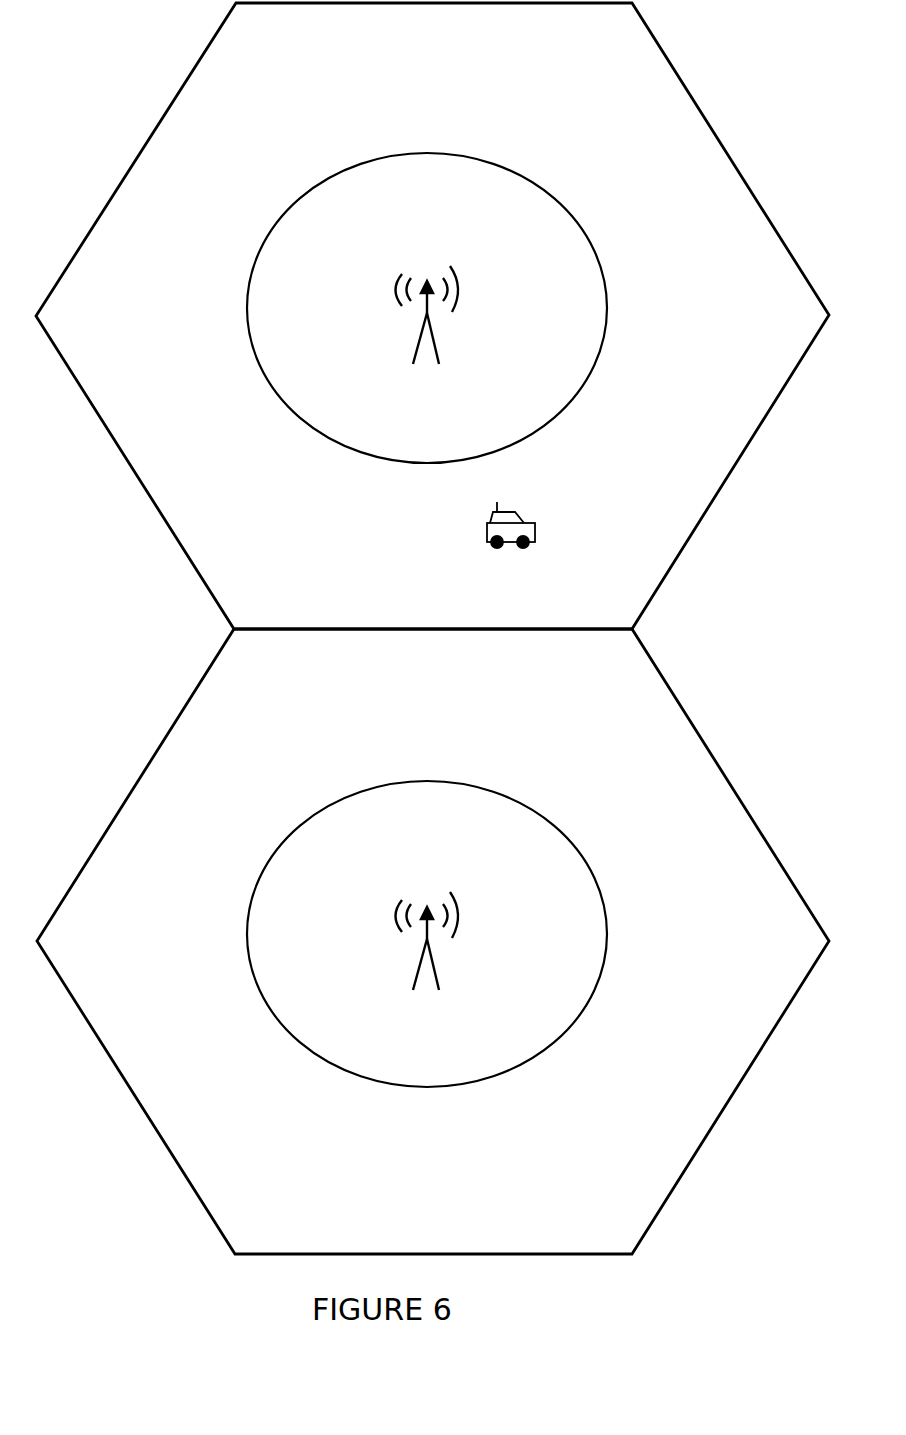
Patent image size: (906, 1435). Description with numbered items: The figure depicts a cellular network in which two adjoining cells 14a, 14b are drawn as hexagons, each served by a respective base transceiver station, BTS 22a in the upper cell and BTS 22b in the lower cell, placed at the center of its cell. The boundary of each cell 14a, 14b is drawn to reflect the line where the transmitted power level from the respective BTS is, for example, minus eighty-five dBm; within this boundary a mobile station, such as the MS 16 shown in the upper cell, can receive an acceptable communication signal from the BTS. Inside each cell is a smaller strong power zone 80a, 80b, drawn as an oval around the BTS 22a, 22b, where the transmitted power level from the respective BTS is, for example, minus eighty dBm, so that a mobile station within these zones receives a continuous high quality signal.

The cell 14a is at (147, 490).
The cell 14b is at (123, 1078).
The MS 16 is at (513, 545).
The BTS 22a is at (418, 346).
The BTS 22b is at (418, 972).
The strong power zone 80a is at (322, 435).
The strong power zone 80b is at (295, 1037).